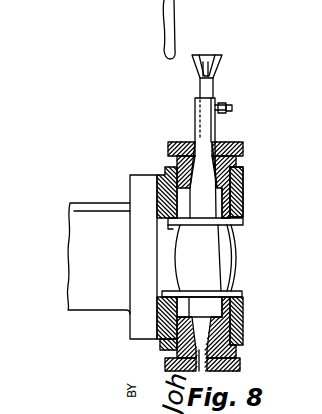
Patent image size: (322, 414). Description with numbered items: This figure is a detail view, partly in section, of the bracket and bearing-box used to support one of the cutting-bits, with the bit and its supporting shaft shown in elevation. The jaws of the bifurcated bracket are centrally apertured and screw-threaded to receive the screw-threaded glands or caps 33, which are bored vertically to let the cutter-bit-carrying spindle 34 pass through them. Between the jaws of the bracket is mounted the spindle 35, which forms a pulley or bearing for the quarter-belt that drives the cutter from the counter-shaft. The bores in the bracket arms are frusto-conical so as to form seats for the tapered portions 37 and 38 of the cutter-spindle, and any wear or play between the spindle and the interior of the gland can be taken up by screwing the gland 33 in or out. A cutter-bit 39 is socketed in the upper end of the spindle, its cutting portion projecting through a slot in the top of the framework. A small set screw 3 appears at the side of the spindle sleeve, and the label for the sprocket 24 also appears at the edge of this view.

The set screw 3 is at (231, 108).
The sprocket 24 is at (192, 235).
The screw-threaded glands or caps 33 is at (227, 146).
The cutter-bit-carrying spindle 34 is at (237, 205).
The spindle 35 is at (234, 274).
The tapered portion of the cutter-spindle 37 is at (206, 170).
The tapered portion of the cutter-spindle 38 is at (160, 344).
The cutter-bit 39 is at (210, 59).